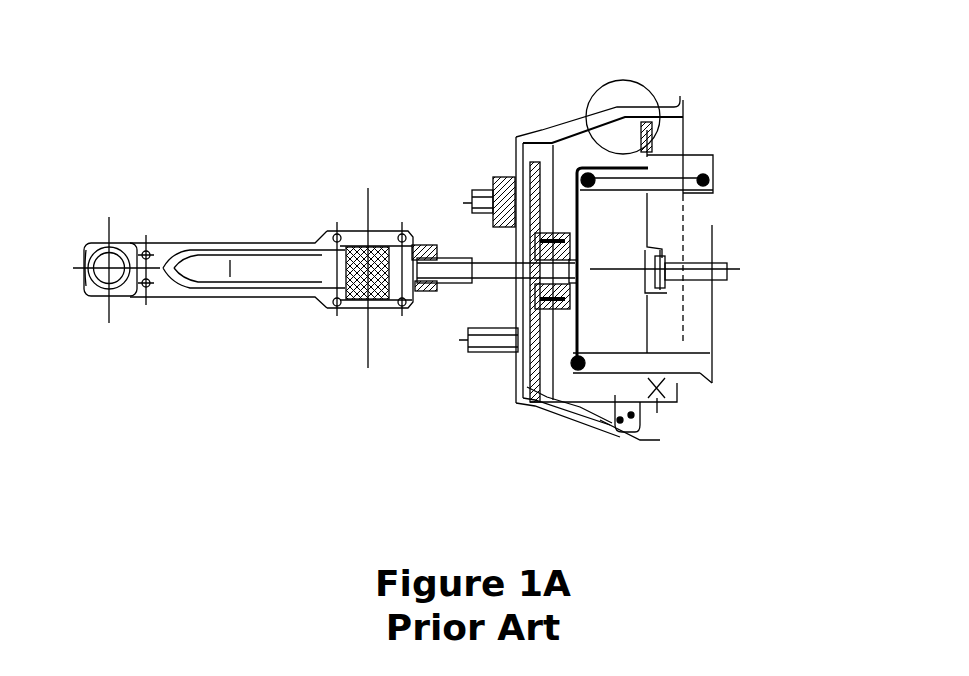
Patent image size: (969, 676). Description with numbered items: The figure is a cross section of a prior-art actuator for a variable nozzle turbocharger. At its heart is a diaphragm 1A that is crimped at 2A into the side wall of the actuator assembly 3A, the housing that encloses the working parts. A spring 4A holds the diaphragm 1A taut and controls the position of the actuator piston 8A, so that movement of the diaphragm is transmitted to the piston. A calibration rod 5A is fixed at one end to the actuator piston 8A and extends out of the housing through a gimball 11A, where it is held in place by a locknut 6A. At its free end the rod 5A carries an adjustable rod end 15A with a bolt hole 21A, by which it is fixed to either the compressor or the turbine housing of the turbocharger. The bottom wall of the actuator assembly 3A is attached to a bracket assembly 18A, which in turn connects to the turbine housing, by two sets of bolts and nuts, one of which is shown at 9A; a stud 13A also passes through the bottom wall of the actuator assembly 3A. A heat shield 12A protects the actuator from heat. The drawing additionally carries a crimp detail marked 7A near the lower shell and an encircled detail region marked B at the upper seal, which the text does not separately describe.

The diaphragm 1A is at (665, 140).
The crimp 2A is at (627, 427).
The actuator assembly 3A is at (700, 387).
The spring 4A is at (697, 199).
The calibration rod 5A is at (455, 283).
The locknut 6A is at (435, 248).
The diaphragm 7A is at (580, 427).
The actuator piston 8A is at (677, 400).
The bolts and nuts 9A is at (498, 183).
The gimball 11A is at (508, 353).
The heat shield 12A is at (540, 128).
The stud 13A is at (467, 352).
The adjustable rod end 15A is at (174, 246).
The bracket assembly 18A is at (518, 403).
The bolt hole 21A is at (97, 293).
The detail circle B is at (623, 116).